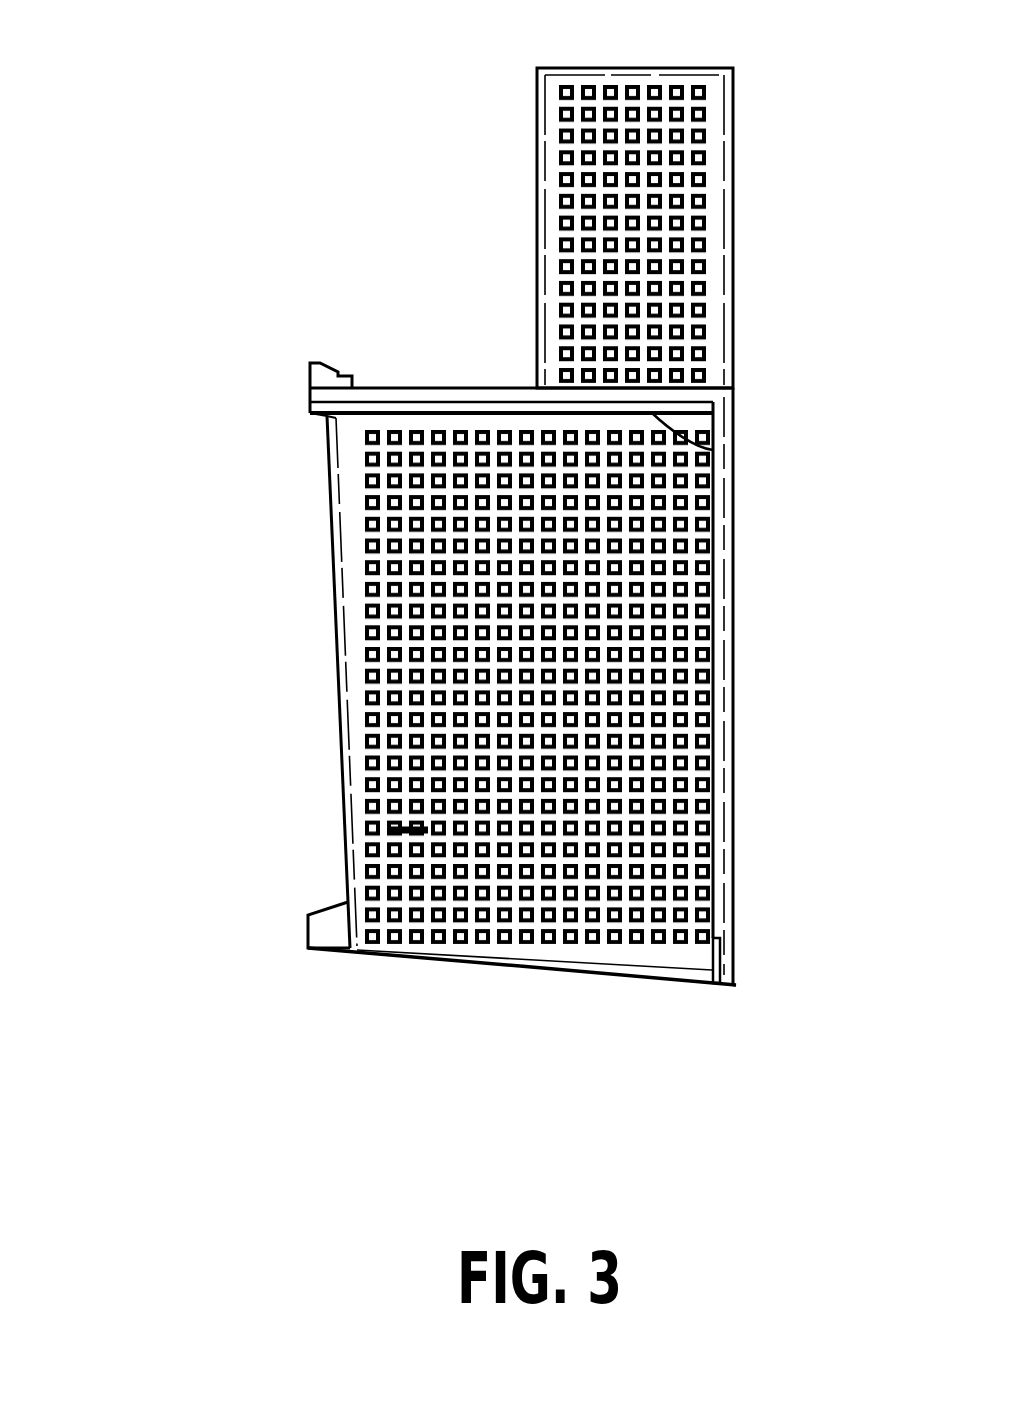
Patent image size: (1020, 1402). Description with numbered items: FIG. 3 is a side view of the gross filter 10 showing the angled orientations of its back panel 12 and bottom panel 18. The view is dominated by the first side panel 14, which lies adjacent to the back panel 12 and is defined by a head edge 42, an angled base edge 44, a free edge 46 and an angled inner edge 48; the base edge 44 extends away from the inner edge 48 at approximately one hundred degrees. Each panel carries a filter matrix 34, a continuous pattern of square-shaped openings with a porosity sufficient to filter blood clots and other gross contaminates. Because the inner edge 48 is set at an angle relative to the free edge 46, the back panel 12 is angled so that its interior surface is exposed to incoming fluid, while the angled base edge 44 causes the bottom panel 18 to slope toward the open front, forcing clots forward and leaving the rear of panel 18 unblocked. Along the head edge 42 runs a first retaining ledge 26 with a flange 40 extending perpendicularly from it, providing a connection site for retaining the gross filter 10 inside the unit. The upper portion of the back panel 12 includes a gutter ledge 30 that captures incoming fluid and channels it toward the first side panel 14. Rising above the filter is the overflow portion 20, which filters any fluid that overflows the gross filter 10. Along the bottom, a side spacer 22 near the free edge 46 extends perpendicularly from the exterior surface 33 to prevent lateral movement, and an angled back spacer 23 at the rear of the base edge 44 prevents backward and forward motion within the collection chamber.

The gross filter 10 is at (468, 168).
The back panel 12 is at (335, 578).
The first side panel 14 is at (368, 762).
The bottom panel 18 is at (372, 955).
The overflow portion 20 is at (712, 133).
The side spacer 22 is at (722, 960).
The back spacer 23 is at (330, 932).
The first retaining ledge 26 is at (308, 414).
The gutter ledge 30 is at (327, 364).
The exterior surface 33 is at (428, 830).
The filter matrix 34 is at (628, 885).
The flange 40 is at (386, 390).
The head edge 42 is at (713, 450).
The base edge 44 is at (515, 970).
The free edge 46 is at (722, 740).
The inner edge 48 is at (345, 697).